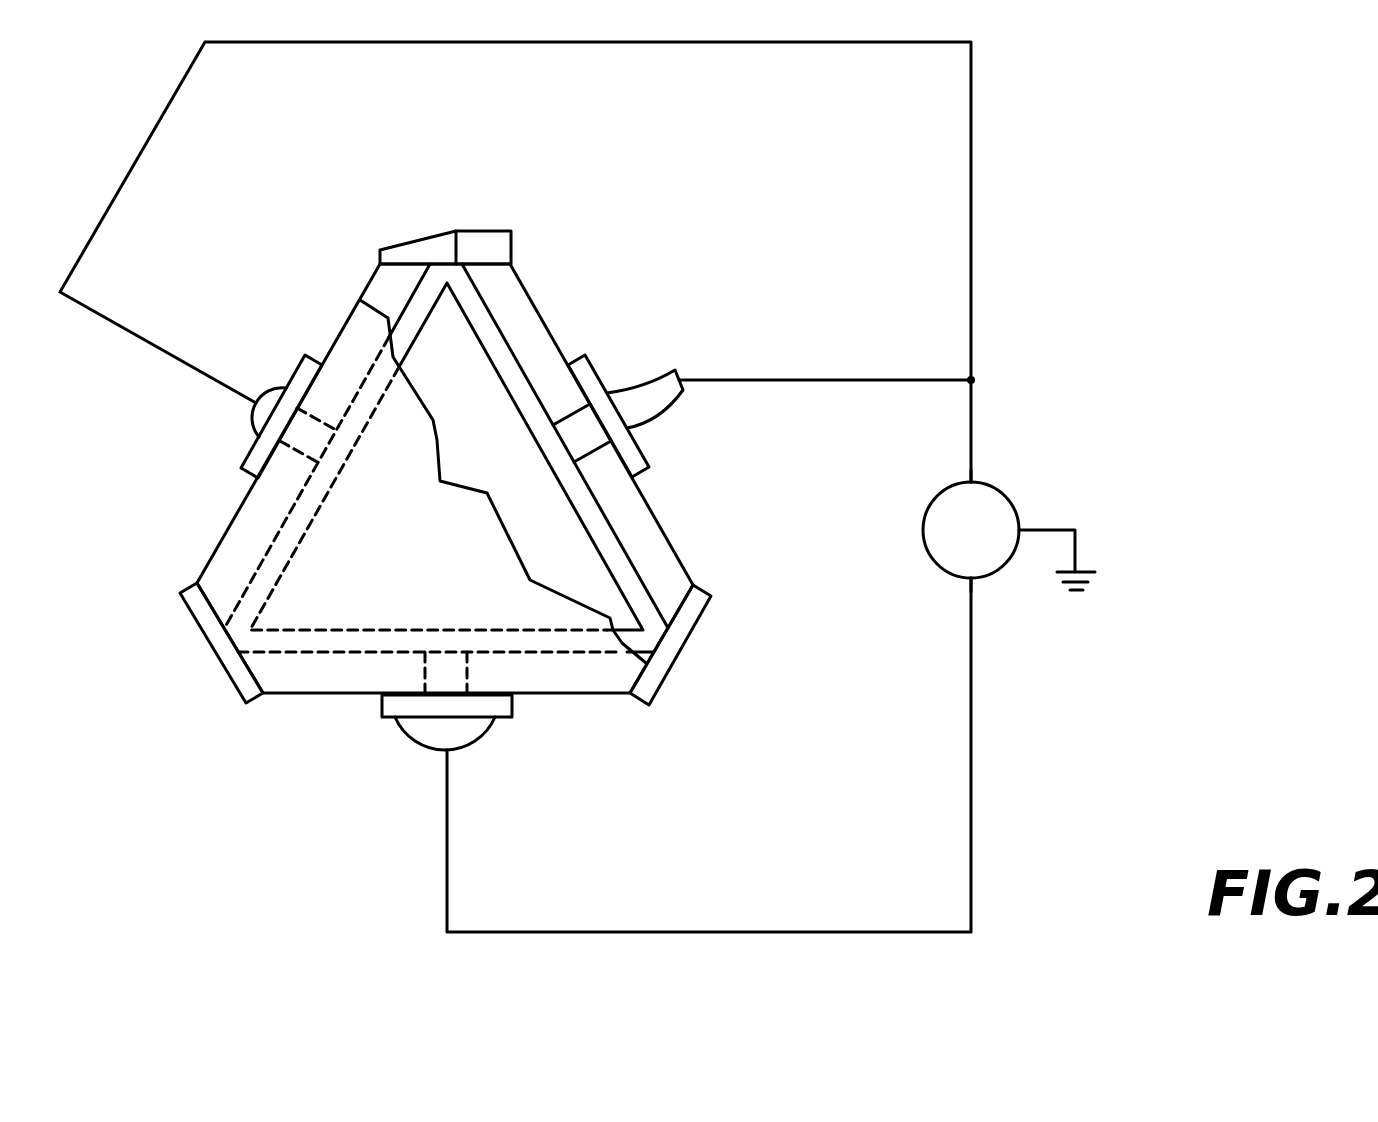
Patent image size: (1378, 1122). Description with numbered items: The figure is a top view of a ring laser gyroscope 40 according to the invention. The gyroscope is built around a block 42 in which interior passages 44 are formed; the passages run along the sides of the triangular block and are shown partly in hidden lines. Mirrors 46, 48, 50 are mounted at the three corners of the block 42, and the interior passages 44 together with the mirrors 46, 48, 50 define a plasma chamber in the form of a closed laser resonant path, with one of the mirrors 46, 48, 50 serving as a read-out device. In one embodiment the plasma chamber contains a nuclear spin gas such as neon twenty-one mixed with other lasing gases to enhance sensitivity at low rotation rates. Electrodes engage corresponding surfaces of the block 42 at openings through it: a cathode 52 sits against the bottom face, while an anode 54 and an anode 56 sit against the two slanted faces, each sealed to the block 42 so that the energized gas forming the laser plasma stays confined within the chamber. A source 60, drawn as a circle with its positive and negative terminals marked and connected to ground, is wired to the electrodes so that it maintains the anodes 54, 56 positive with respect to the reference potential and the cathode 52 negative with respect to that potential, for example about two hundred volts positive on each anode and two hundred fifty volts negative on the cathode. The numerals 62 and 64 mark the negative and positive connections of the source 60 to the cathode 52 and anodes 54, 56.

The ring laser gyroscope 40 is at (703, 266).
The block 42 is at (212, 562).
The interior passages 44 is at (505, 355).
The mirror 46 is at (487, 240).
The mirror 48 is at (680, 647).
The mirror 50 is at (207, 652).
The cathode 52 is at (390, 715).
The anode 54 is at (645, 466).
The anode 56 is at (252, 459).
The source 60 is at (1007, 498).
The negative terminal 62 is at (968, 579).
The positive terminal 64 is at (968, 479).